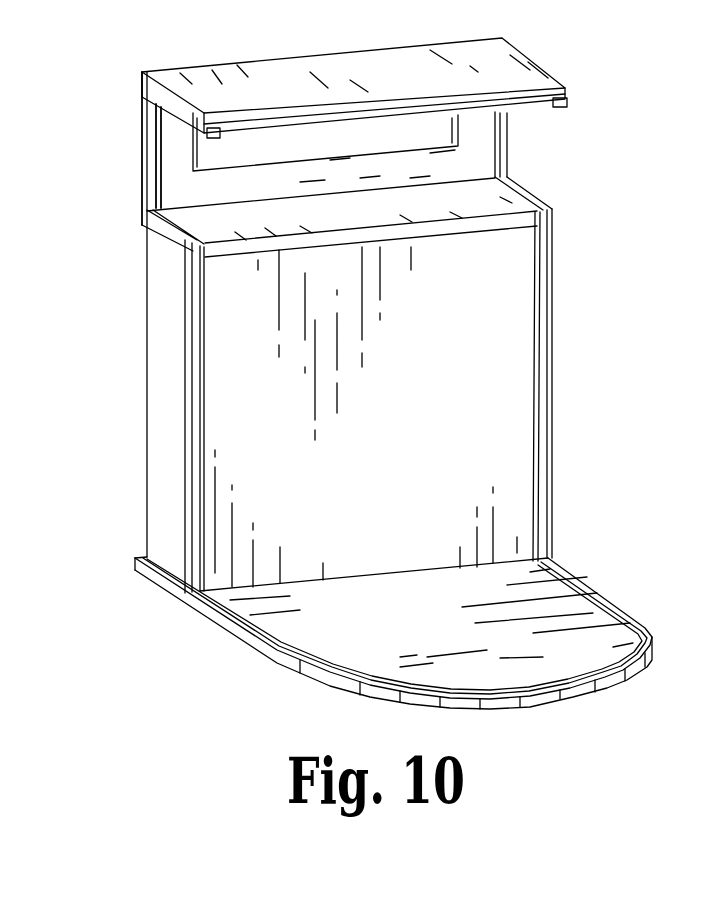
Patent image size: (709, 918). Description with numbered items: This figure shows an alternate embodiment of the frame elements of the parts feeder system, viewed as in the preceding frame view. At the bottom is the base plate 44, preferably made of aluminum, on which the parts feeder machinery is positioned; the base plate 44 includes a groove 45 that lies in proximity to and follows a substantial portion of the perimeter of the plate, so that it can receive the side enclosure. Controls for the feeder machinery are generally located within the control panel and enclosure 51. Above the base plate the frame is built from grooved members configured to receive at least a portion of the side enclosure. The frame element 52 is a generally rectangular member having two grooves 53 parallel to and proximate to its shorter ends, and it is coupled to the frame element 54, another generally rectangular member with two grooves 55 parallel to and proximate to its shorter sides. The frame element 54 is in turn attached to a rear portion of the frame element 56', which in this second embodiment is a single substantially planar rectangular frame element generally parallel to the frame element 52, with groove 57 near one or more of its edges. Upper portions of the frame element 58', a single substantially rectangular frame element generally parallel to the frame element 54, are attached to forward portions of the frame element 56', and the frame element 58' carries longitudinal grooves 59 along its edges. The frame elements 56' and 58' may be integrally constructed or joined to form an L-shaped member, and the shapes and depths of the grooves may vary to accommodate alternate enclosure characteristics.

The base plate 44 is at (430, 630).
The groove 45 is at (267, 630).
The control panel and enclosure 51 is at (176, 403).
The frame element 52 is at (410, 84).
The grooves 53 is at (220, 134).
The frame element 54 is at (150, 162).
The grooves 55 is at (155, 137).
The frame element 56' is at (329, 176).
The groove 57 is at (152, 232).
The frame element 58' is at (374, 419).
The longitudinal grooves 59 is at (198, 300).